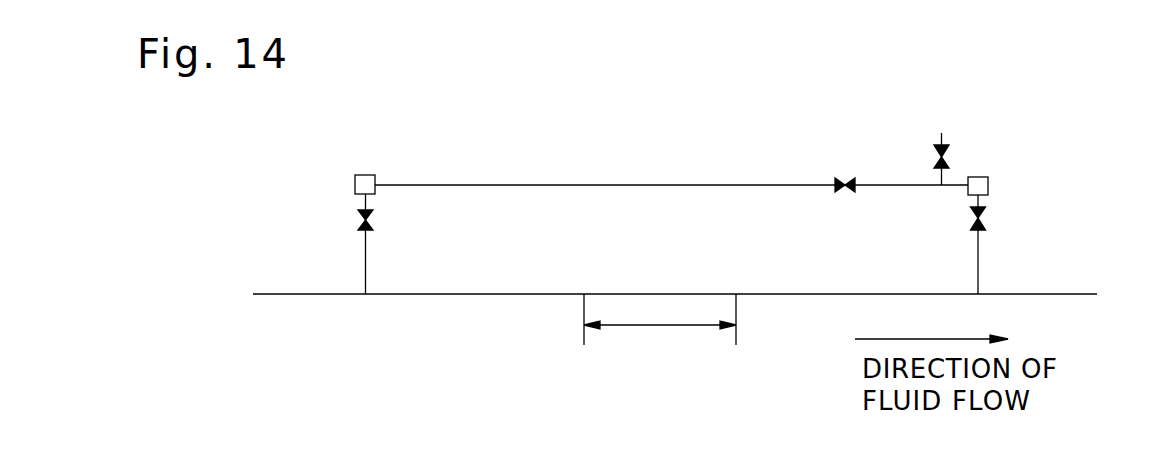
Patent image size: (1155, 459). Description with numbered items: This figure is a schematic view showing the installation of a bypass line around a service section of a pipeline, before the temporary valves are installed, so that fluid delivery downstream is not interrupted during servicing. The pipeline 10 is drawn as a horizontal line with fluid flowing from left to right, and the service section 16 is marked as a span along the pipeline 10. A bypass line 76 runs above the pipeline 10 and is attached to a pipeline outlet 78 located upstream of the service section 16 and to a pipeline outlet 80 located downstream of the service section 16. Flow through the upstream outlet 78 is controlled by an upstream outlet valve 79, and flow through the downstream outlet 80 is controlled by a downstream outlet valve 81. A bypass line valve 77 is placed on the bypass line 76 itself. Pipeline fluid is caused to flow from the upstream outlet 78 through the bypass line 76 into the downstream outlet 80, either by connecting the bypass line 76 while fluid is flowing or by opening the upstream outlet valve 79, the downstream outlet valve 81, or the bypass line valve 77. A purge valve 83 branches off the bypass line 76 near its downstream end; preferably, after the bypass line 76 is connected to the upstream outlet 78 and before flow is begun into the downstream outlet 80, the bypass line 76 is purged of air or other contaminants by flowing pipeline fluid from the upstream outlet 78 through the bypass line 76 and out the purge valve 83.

The pipeline 10 is at (1063, 294).
The service section 16 is at (667, 325).
The bypass line 76 is at (580, 185).
The bypass line valve 77 is at (843, 176).
The pipeline outlet 78 is at (353, 182).
The upstream outlet valve 79 is at (360, 218).
The pipeline outlet 80 is at (985, 185).
The downstream outlet valve 81 is at (982, 214).
The purge valve 83 is at (937, 149).